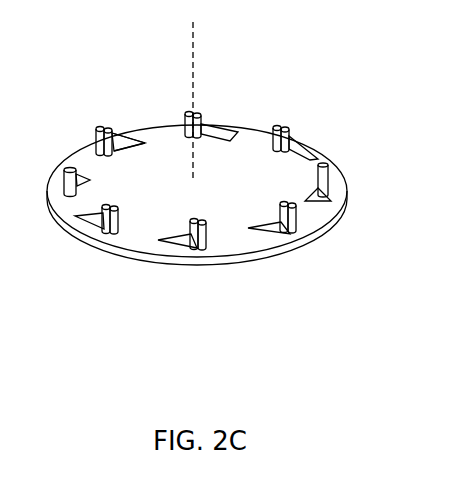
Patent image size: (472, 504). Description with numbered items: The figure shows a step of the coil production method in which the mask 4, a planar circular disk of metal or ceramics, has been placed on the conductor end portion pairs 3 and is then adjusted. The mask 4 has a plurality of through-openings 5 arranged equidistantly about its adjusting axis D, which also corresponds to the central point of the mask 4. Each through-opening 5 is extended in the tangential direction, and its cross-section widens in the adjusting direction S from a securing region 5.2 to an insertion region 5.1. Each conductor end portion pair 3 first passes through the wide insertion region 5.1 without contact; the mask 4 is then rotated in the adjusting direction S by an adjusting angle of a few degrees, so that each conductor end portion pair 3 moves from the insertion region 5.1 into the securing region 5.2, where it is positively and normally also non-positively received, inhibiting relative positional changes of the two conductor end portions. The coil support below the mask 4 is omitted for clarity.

The conductor end portion pair 3 is at (107, 128).
The mask 4 is at (159, 192).
The through-opening 5 is at (120, 135).
The insertion region 5.1 is at (139, 137).
The securing region 5.2 is at (96, 141).
The adjusting axis D is at (196, 72).
The adjusting direction S is at (68, 238).